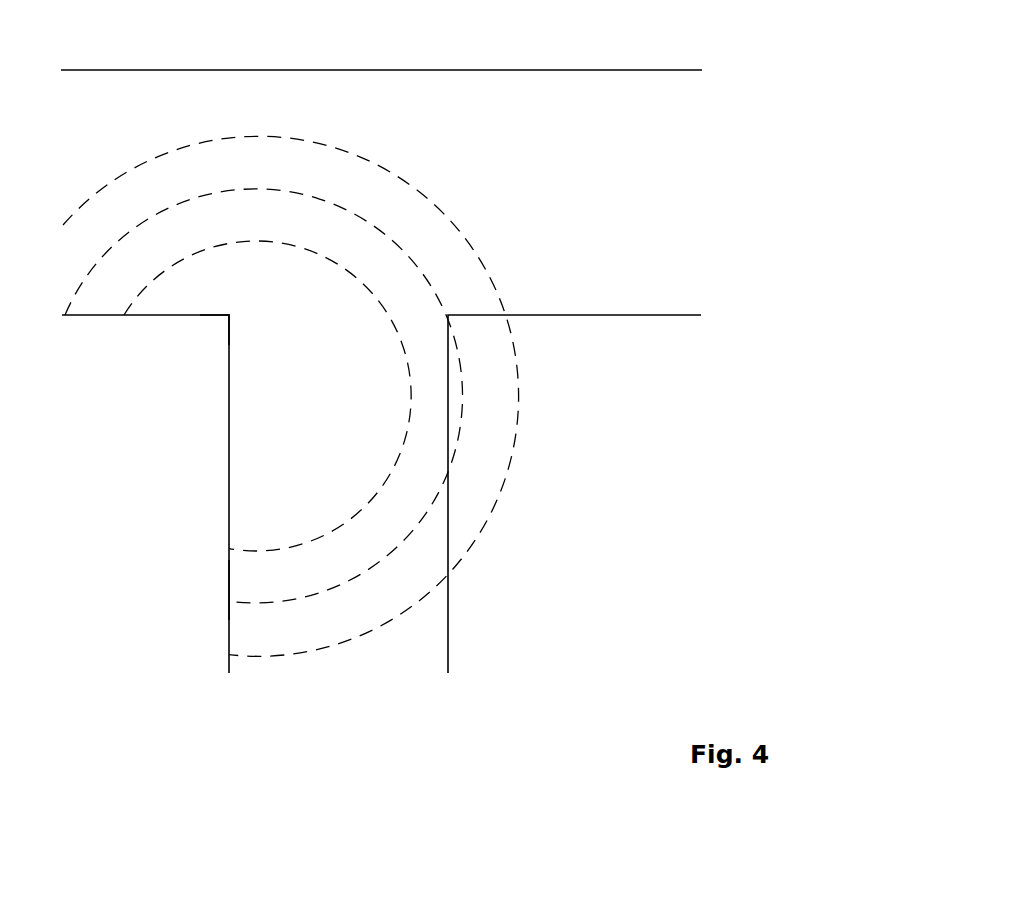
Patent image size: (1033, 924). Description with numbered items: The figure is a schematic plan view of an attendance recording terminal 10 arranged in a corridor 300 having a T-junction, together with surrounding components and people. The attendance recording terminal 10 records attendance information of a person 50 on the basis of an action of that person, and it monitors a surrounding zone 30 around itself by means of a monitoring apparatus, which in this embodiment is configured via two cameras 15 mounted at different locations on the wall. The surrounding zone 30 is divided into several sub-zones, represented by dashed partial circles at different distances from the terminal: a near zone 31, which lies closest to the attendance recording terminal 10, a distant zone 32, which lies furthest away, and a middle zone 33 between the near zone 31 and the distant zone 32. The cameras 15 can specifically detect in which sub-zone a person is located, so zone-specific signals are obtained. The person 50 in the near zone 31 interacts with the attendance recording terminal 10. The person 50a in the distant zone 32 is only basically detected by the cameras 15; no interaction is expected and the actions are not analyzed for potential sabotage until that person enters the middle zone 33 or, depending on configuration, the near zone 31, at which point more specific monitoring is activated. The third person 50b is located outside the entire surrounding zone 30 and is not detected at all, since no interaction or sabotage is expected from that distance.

The attendance recording terminal 10 is at (381, 494).
The cameras 15 is at (272, 372).
The surrounding zone 30 is at (133, 170).
The near zone 31 is at (207, 302).
The distant zone 32 is at (441, 241).
The middle zone 33 is at (265, 573).
The person 50 is at (267, 396).
The person 50a is at (264, 377).
The person 50b is at (291, 371).
The corridor 300 is at (587, 70).